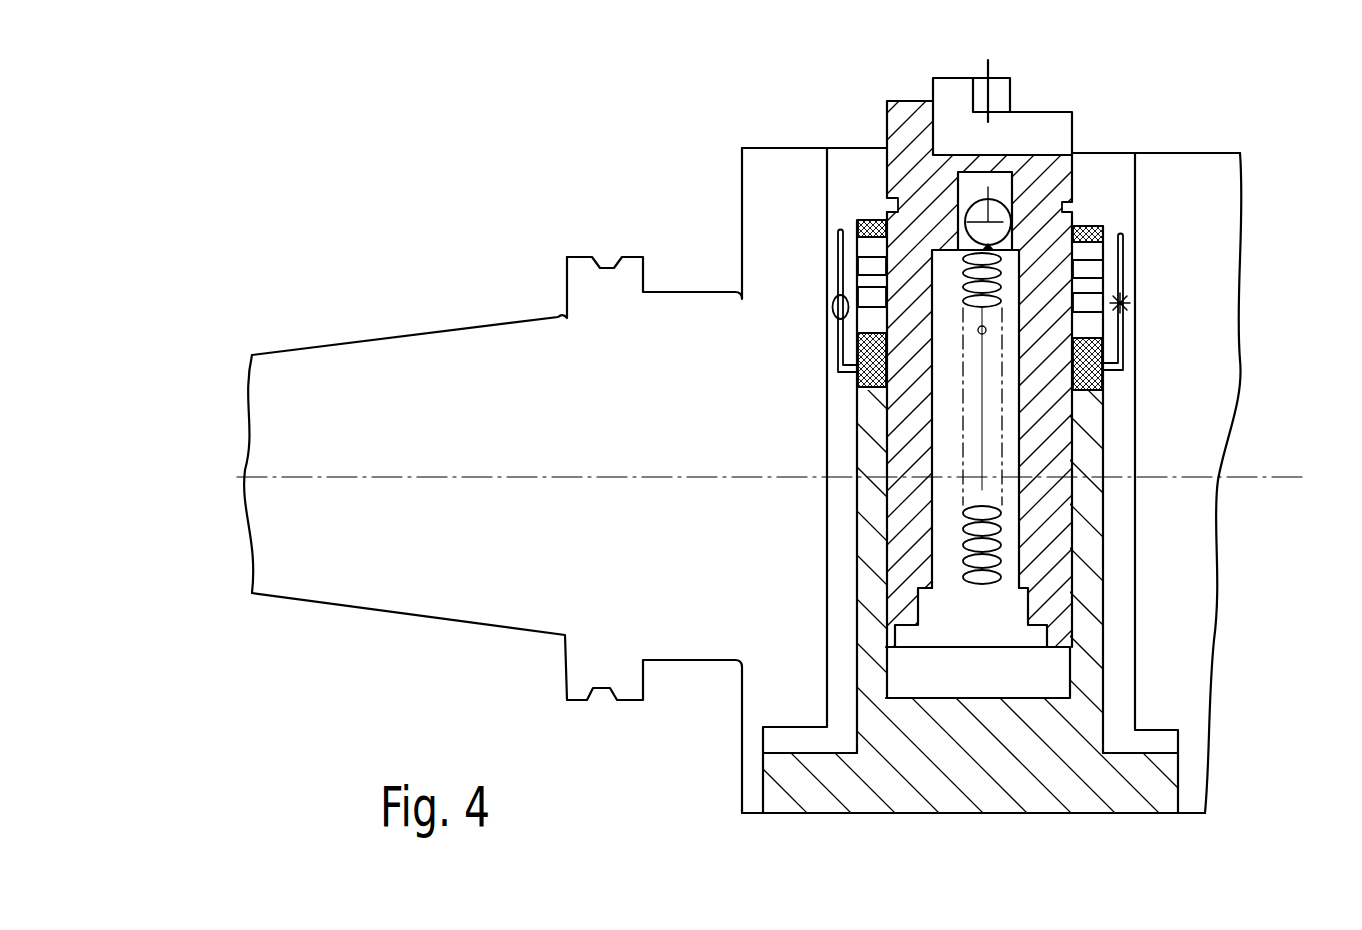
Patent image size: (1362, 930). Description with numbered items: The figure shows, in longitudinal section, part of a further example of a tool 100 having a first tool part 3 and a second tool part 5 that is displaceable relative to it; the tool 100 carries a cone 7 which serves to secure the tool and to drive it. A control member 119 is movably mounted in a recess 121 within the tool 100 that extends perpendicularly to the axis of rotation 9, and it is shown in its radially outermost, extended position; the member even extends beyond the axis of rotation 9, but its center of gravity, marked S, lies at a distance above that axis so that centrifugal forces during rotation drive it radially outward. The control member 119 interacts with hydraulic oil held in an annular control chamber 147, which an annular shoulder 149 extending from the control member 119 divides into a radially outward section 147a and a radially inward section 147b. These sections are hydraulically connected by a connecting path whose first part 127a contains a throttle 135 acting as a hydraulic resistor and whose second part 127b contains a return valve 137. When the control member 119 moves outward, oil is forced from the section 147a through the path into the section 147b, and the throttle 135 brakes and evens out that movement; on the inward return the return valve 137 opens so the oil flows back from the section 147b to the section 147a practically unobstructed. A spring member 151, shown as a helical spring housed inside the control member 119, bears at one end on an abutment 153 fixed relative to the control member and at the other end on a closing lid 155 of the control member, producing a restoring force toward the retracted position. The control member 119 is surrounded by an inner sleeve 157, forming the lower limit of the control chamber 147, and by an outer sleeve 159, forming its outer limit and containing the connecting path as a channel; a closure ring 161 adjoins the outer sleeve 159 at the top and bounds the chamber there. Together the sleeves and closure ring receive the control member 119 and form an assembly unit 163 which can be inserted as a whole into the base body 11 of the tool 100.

The first tool part 3 is at (693, 330).
The second tool part 5 is at (962, 95).
The cone 7 is at (382, 379).
The axis of rotation 9 is at (287, 475).
The base body 11 is at (482, 428).
The tool 100 is at (712, 243).
The control member 119 is at (877, 207).
The recess 121 is at (822, 648).
The first part of connecting path 127a is at (1127, 351).
The second part of connecting path 127b is at (838, 279).
The throttle 135 is at (1133, 304).
The return valve 137 is at (836, 312).
The control chamber 147 is at (1088, 402).
The radially outward section of control chamber 147a is at (858, 227).
The radially inward section of control chamber 147b is at (862, 378).
The annular shoulder 149 is at (1114, 300).
The spring member 151 is at (950, 437).
The abutment 153 is at (992, 217).
The closing lid 155 is at (987, 624).
The inner sleeve 157 is at (1080, 678).
The outer sleeve 159 is at (1110, 585).
The closure ring 161 is at (1117, 202).
The assembly unit 163 is at (768, 812).
The sensor S is at (979, 335).